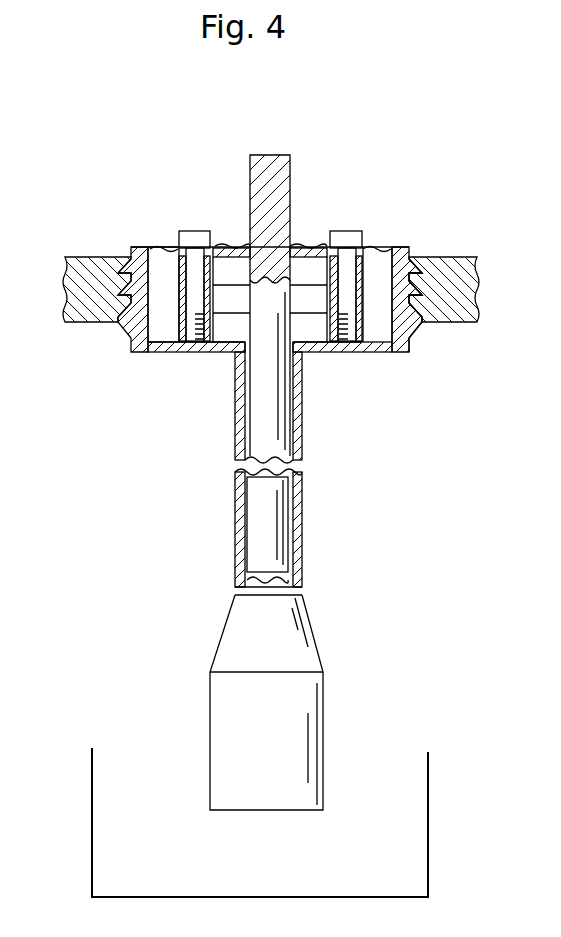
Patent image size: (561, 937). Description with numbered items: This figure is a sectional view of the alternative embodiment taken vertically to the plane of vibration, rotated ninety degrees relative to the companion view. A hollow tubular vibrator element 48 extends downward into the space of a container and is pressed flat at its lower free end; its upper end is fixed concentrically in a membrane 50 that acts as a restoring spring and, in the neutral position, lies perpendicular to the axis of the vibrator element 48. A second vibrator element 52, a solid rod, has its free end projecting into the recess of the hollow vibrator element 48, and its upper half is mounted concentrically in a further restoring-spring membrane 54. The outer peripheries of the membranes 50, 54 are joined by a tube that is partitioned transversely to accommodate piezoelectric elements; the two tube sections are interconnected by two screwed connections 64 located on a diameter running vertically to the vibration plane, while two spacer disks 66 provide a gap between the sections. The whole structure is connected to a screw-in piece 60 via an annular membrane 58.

The vibrator element 48 is at (302, 517).
The membrane 50 is at (305, 352).
The second vibrator element 52 is at (270, 165).
The membrane 54 is at (302, 258).
The annular membrane 58 is at (374, 353).
The screw-in piece 60 is at (405, 330).
The screwed connection 64 is at (195, 241).
The spacer disk 66 is at (179, 303).